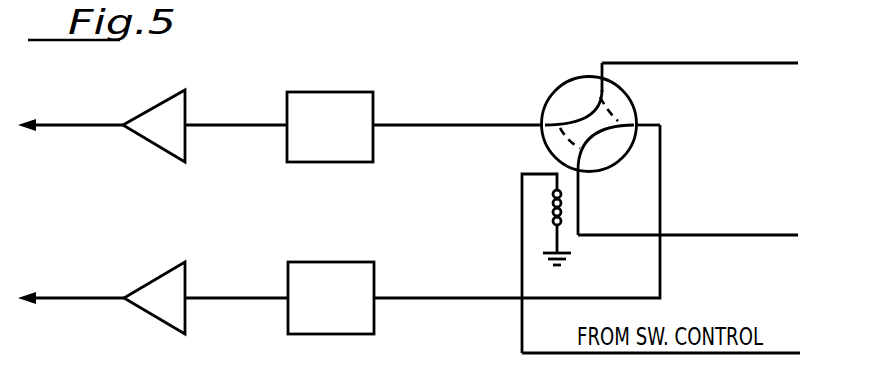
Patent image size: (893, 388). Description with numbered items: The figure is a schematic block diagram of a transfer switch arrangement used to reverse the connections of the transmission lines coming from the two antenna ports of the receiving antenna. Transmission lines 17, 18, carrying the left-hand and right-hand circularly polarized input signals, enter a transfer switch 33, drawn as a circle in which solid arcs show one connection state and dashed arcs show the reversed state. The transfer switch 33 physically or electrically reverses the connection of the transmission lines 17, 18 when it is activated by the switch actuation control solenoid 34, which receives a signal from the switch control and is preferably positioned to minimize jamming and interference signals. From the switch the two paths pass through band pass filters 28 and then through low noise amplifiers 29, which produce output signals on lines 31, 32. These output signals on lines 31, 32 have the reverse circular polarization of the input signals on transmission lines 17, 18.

The transmission line 17 is at (723, 64).
The transmission line 18 is at (697, 234).
The band pass filter 28 is at (297, 162).
The low noise amplifier 29 is at (157, 142).
The output line 31 is at (62, 300).
The output line 32 is at (62, 127).
The transfer switch 33 is at (554, 92).
The switch actuation control solenoid 34 is at (553, 213).